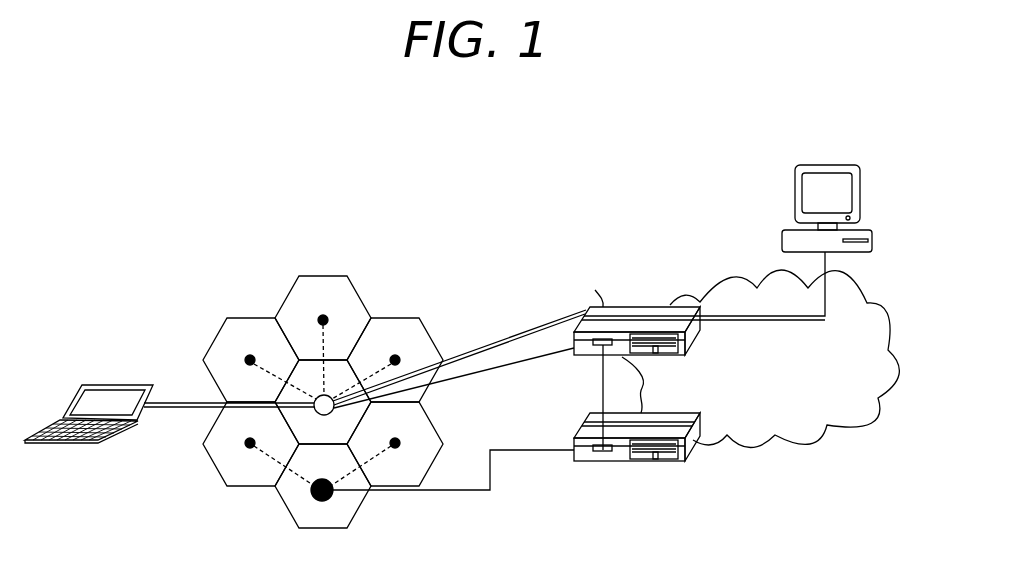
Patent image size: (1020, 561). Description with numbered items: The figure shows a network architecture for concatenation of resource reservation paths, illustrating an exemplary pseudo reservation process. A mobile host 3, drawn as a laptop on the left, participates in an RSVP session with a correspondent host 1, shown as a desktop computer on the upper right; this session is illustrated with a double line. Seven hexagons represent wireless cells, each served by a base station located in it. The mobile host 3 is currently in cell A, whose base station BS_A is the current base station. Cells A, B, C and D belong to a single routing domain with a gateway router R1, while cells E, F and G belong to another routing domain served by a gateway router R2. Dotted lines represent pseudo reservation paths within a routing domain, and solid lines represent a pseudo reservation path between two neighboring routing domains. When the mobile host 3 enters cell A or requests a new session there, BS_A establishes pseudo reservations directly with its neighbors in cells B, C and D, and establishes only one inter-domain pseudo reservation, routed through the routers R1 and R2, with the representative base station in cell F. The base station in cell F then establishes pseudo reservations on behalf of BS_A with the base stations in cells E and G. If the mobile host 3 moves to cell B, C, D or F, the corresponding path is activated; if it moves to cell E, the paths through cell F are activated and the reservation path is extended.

The correspondent host 1 is at (858, 188).
The mobile host 3 is at (82, 400).
The gateway router R1 is at (603, 312).
The gateway router R2 is at (688, 455).
The cell A is at (323, 401).
The cell B is at (259, 360).
The cell C is at (323, 335).
The cell D is at (387, 360).
The cell E is at (258, 444).
The cell F is at (323, 486).
The cell G is at (387, 444).